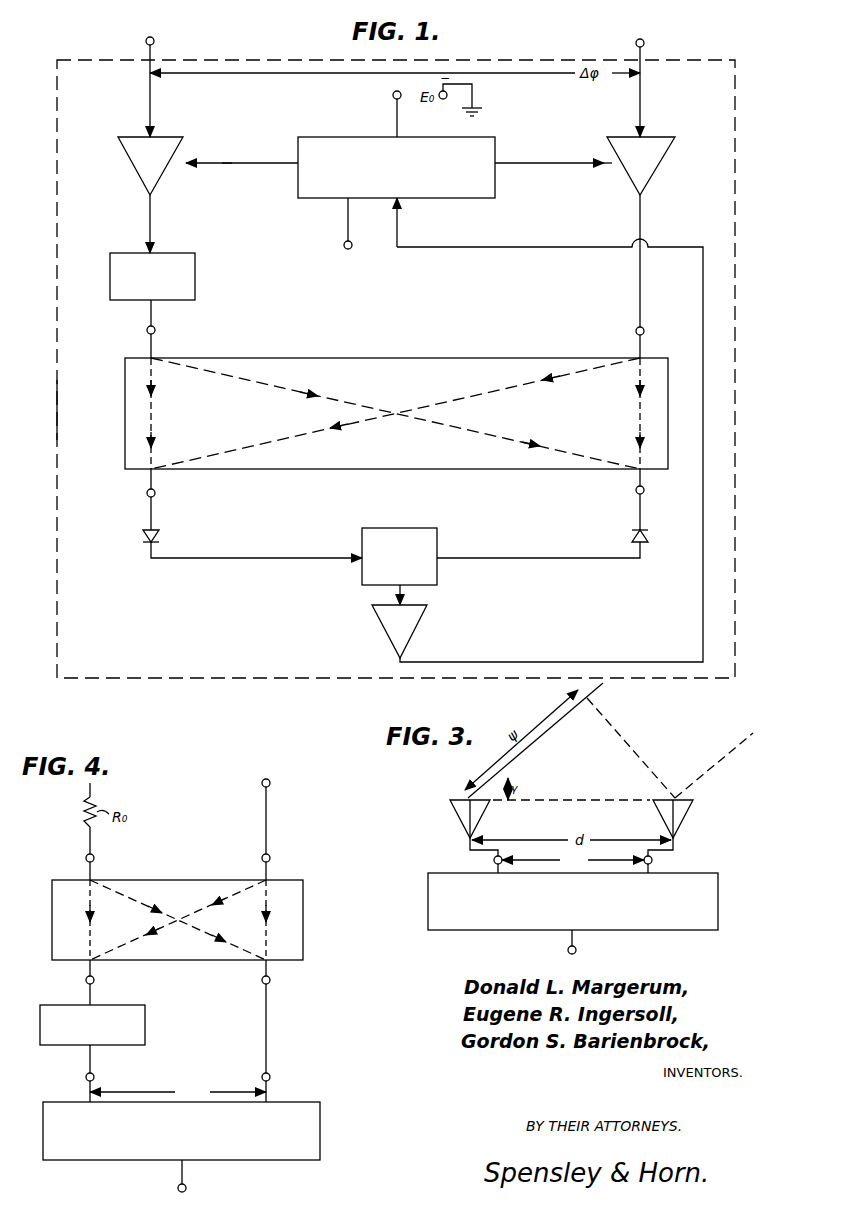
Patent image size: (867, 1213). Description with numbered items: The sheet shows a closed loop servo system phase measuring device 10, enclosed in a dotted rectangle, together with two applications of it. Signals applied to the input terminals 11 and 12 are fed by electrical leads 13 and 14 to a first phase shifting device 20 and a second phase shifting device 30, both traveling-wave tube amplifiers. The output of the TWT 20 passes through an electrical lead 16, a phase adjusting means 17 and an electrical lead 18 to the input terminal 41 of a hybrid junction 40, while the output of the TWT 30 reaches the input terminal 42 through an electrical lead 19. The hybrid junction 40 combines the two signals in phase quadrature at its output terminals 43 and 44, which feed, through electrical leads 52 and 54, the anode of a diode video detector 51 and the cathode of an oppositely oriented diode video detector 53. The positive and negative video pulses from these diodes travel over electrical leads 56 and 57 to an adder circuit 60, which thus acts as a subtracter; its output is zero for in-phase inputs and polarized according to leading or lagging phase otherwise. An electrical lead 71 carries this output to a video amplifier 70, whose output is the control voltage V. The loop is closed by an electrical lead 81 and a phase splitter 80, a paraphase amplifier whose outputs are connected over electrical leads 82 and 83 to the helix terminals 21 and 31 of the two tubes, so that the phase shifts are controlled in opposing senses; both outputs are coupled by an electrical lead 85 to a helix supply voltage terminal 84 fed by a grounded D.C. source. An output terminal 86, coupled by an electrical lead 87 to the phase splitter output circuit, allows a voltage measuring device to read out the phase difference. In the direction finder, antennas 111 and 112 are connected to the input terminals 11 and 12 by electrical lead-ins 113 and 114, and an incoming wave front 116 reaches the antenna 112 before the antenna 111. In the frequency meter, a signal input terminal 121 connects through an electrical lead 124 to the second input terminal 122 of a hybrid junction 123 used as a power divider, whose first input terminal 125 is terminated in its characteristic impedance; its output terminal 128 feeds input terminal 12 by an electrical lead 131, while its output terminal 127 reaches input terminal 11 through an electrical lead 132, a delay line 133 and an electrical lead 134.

In FIG. 1, the phase measuring device 10 is at (55, 410).
In FIG. 4, the phase measuring device 10 is at (42, 1158).
In FIG. 3, the phase measuring device 10 is at (426, 904).
In FIG. 1, the signal input terminal 11 is at (150, 38).
In FIG. 4, the signal input terminal 11 is at (86, 1077).
In FIG. 3, the signal input terminal 11 is at (504, 858).
In FIG. 1, the signal input terminal 12 is at (645, 46).
In FIG. 4, the signal input terminal 12 is at (270, 1074).
In FIG. 3, the signal input terminal 12 is at (644, 856).
In FIG. 1, the electrical lead 13 is at (148, 104).
In FIG. 4, the electrical lead 13 is at (86, 1093).
In FIG. 3, the electrical lead 13 is at (496, 868).
In FIG. 1, the electrical lead 14 is at (642, 112).
In FIG. 4, the electrical lead 14 is at (270, 1096).
In FIG. 3, the electrical lead 14 is at (656, 870).
In FIG. 1, the electrical lead 16 is at (149, 214).
In FIG. 1, the phase adjusting means 17 is at (110, 290).
In FIG. 1, the electrical lead 18 is at (148, 322).
In FIG. 1, the electrical lead 19 is at (643, 224).
In FIG. 1, the first phase shifting device 20 is at (124, 170).
In FIG. 1, the helix terminal 21 is at (183, 162).
In FIG. 1, the second phase shifting device 30 is at (666, 163).
In FIG. 1, the helix terminal 31 is at (612, 168).
In FIG. 1, the hybrid junction 40 is at (334, 356).
In FIG. 1, the input terminal 41 is at (146, 334).
In FIG. 1, the input terminal 42 is at (645, 331).
In FIG. 1, the output terminal 43 is at (146, 493).
In FIG. 1, the output terminal 44 is at (645, 490).
In FIG. 1, the diode video detector 51 is at (148, 538).
In FIG. 1, the electrical lead 52 is at (149, 516).
In FIG. 1, the diode video detector 53 is at (650, 538).
In FIG. 1, the electrical lead 54 is at (645, 517).
In FIG. 1, the electrical lead 56 is at (146, 560).
In FIG. 1, the electrical lead 57 is at (645, 557).
In FIG. 1, the adder circuit 60 is at (448, 512).
In FIG. 1, the video amplifier 70 is at (424, 626).
In FIG. 1, the electrical lead 71 is at (408, 598).
In FIG. 1, the phase splitter 80 is at (500, 118).
In FIG. 1, the electrical lead 81 is at (650, 660).
In FIG. 1, the electrical lead 82 is at (227, 164).
In FIG. 1, the electrical lead 83 is at (558, 164).
In FIG. 1, the helix supply voltage terminal 84 is at (392, 95).
In FIG. 1, the electrical lead 85 is at (396, 122).
In FIG. 1, the output terminal 86 is at (344, 247).
In FIG. 4, the output terminal 86 is at (177, 1188).
In FIG. 3, the output terminal 86 is at (568, 950).
In FIG. 1, the electrical lead 87 is at (347, 222).
In FIG. 4, the electrical lead 87 is at (186, 1172).
In FIG. 3, the electrical lead 87 is at (576, 940).
In FIG. 3, the antenna 111 is at (455, 806).
In FIG. 3, the antenna 112 is at (694, 805).
In FIG. 3, the electrical lead-in 113 is at (494, 852).
In FIG. 3, the electrical lead-in 114 is at (654, 852).
In FIG. 3, the wave front 116 is at (616, 752).
In FIG. 4, the signal input terminal 121 is at (270, 784).
In FIG. 4, the second input terminal 122 is at (270, 858).
In FIG. 4, the hybrid junction 123 is at (295, 927).
In FIG. 4, the electrical lead 124 is at (267, 832).
In FIG. 4, the first input terminal 125 is at (94, 856).
In FIG. 4, the output terminal 127 is at (86, 980).
In FIG. 4, the output terminal 128 is at (270, 980).
In FIG. 4, the electrical lead 131 is at (268, 1018).
In FIG. 4, the electrical lead 132 is at (92, 998).
In FIG. 4, the delay line 133 is at (34, 1036).
In FIG. 4, the electrical lead 134 is at (88, 1058).